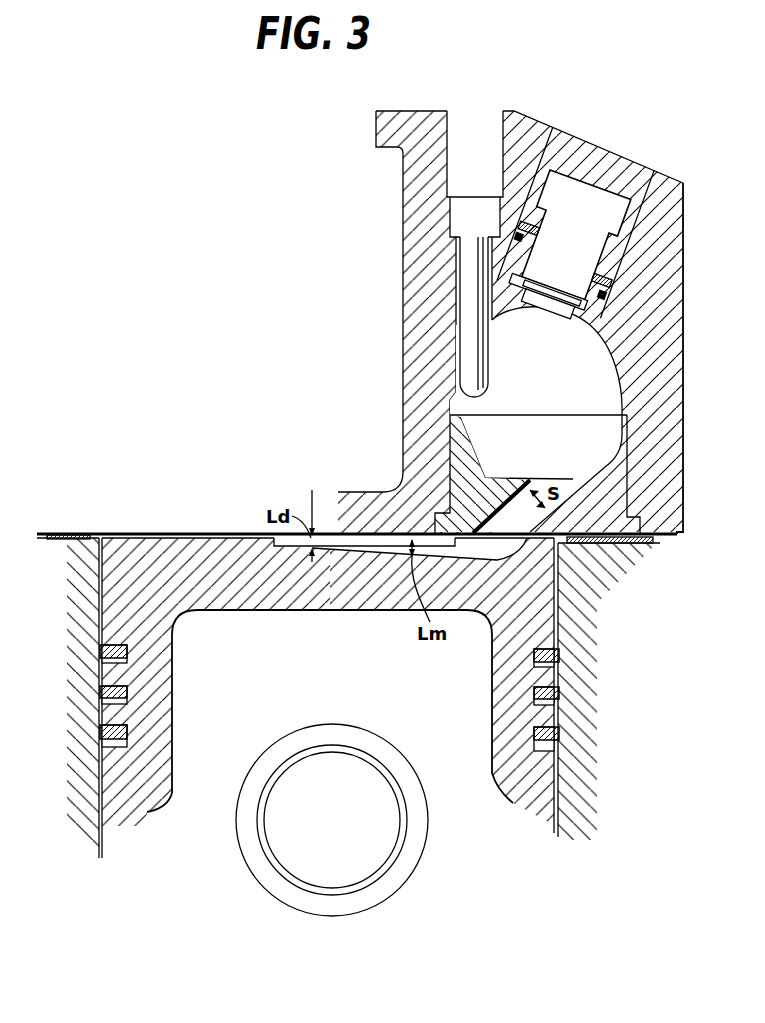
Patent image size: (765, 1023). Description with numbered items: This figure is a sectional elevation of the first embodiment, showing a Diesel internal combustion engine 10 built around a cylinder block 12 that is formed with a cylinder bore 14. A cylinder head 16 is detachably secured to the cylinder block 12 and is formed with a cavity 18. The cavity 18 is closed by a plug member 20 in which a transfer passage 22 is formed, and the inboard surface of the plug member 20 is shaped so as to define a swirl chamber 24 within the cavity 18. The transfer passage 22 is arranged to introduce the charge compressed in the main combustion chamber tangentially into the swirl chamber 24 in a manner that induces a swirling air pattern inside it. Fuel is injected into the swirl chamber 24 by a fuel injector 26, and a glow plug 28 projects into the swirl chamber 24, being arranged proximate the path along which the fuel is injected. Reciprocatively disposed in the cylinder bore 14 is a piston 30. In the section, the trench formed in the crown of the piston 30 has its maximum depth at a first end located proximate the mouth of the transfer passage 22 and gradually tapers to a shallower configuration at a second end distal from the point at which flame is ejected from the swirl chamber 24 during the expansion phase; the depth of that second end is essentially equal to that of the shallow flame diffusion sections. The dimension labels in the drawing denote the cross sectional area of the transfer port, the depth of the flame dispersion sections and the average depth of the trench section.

The internal combustion engine 10 is at (256, 316).
The cylinder block 12 is at (80, 629).
The cylinder bore 14 is at (100, 843).
The cylinder head 16 is at (410, 177).
The cavity 18 is at (608, 368).
The plug member 20 is at (463, 463).
The transfer passage 22 is at (566, 389).
The swirl chamber 24 is at (520, 518).
The fuel injector 26 is at (577, 198).
The glow plug 28 is at (470, 302).
The piston 30 is at (318, 610).